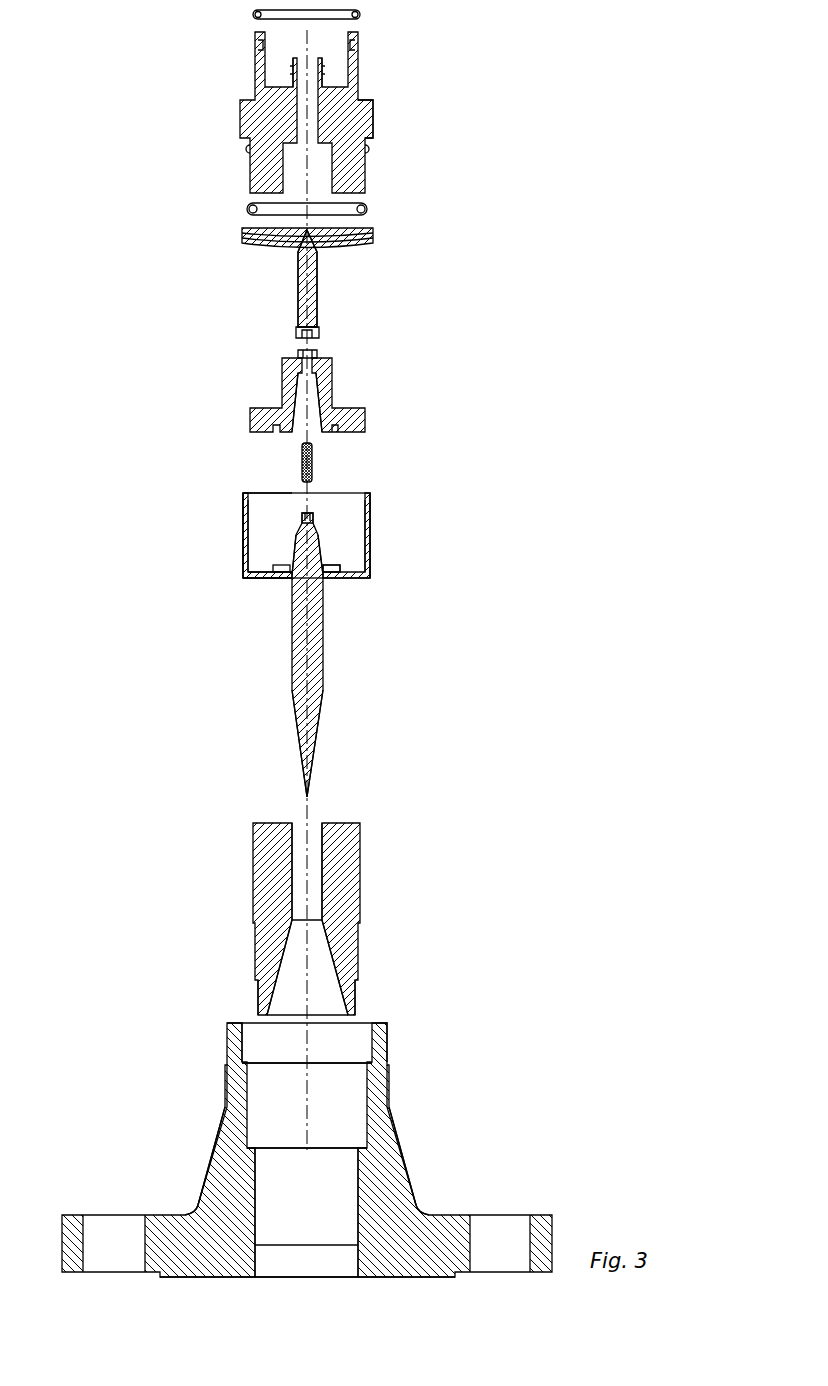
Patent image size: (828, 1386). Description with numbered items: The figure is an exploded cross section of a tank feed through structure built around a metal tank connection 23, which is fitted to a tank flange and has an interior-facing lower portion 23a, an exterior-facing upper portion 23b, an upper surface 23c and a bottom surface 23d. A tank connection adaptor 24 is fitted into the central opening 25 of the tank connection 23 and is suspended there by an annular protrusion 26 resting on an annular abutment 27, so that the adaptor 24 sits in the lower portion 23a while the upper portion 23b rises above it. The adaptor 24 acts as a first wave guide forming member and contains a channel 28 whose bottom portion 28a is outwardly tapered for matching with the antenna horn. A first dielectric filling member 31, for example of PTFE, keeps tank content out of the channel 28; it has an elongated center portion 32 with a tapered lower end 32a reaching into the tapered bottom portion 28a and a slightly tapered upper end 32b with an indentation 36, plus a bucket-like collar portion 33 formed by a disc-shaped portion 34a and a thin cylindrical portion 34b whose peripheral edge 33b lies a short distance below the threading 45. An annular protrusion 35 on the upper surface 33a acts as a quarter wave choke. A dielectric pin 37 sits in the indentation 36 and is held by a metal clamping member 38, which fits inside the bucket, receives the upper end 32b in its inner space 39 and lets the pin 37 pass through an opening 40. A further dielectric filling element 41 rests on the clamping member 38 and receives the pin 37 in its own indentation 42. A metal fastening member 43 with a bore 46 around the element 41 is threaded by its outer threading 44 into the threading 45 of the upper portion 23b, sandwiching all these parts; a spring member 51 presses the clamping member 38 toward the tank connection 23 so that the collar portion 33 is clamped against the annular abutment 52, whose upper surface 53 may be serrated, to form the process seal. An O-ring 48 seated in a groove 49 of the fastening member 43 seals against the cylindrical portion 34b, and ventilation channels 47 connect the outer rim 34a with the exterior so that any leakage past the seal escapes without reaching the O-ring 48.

The tank connection 23 is at (203, 1173).
The lower portion of the tank connection 23a is at (357, 1262).
The upper portion of the tank connection 23b is at (383, 1087).
The upper surface of the tank connection 23c is at (378, 1023).
The bottom surface of the tank connection 23d is at (398, 1275).
The tank connection adaptor 24 is at (360, 852).
The central opening 25 is at (340, 1050).
The annular protrusion 26 is at (262, 972).
The annular abutment 27 is at (255, 1238).
The channel 28 is at (302, 832).
The bottom portion of the channel 28a is at (320, 970).
The first dielectric filling member 31 is at (420, 605).
The center portion 32 is at (318, 660).
The tapered lower end 32a is at (318, 742).
The upper end of the center portion 32b is at (316, 548).
The collar portion 33 is at (348, 583).
The upper surface of the collar portion 33a is at (258, 563).
The peripheral edge of the collar portion 33b is at (245, 493).
The disc-shaped portion 34a is at (267, 578).
The cylindrical portion 34b is at (370, 552).
The annular protrusion 35 is at (333, 563).
The indentation 36 is at (310, 514).
The pin 37 is at (312, 463).
The clamping member 38 is at (332, 388).
The inner space 39 is at (300, 425).
The opening 40 is at (317, 353).
The wave guide dielectric filling element 41 is at (313, 290).
The indentation 42 is at (296, 338).
The fastening member 43 is at (355, 177).
The outer threading 44 is at (373, 120).
The threading 45 is at (243, 1040).
The bore 46 is at (310, 63).
The ventilation channels 47 is at (247, 1068).
The O-ring 48 is at (350, 207).
The groove 49 is at (250, 150).
The spring member 51 is at (373, 238).
The annular abutment 52 is at (235, 1125).
The upper surface of the abutment 53 is at (395, 1130).